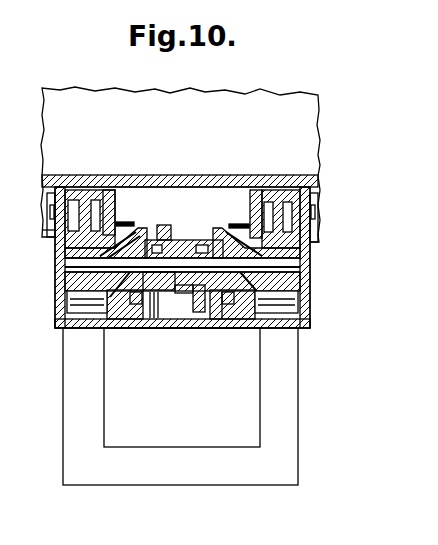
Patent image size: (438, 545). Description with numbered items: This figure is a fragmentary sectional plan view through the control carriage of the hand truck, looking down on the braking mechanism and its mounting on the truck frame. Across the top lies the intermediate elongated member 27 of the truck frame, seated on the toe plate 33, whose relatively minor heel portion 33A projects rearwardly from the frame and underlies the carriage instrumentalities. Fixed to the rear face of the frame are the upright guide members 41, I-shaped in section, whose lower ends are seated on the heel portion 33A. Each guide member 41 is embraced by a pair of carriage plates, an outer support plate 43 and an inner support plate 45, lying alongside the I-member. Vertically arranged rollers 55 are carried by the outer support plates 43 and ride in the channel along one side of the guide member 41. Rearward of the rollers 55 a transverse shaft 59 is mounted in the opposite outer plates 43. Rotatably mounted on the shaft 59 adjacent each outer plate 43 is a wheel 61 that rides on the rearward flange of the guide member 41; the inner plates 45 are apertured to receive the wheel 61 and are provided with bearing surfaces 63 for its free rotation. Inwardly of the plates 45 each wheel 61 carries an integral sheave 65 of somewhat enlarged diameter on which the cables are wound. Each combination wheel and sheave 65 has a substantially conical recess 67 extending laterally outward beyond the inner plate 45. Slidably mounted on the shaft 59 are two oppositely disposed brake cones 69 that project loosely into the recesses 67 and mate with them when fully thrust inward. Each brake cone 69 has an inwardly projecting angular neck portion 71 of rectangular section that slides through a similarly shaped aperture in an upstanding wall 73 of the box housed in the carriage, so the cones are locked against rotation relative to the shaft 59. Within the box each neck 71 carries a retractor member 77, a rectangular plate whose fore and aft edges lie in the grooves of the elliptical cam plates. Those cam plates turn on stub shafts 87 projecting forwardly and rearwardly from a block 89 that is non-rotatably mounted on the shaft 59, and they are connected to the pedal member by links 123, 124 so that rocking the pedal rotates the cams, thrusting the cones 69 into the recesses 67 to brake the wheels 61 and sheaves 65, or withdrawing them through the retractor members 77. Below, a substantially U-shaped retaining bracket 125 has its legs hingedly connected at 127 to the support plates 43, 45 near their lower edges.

The intermediate elongated member 27 is at (186, 180).
The toe plate 33 is at (310, 118).
The heel portion 33A is at (48, 236).
The upright guide member 41 is at (88, 180).
The outer support plate 43 is at (63, 178).
The inner support plate 45 is at (118, 180).
The roller 55 is at (50, 212).
The shaft 59 is at (300, 268).
The wheel 61 is at (65, 290).
The bearing surface 63 is at (128, 246).
The sheave 65 is at (133, 222).
The conical recess 67 is at (140, 252).
The brake cone 69 is at (140, 319).
The angular neck portion 71 is at (154, 319).
The upstanding wall 73 is at (150, 319).
The retractor member 77 is at (158, 319).
The stub shaft 87 is at (190, 241).
The block 89 is at (190, 319).
The link 123 is at (165, 226).
The link 124 is at (200, 319).
The retaining bracket 125 is at (285, 385).
The hinge connection 127 is at (54, 310).